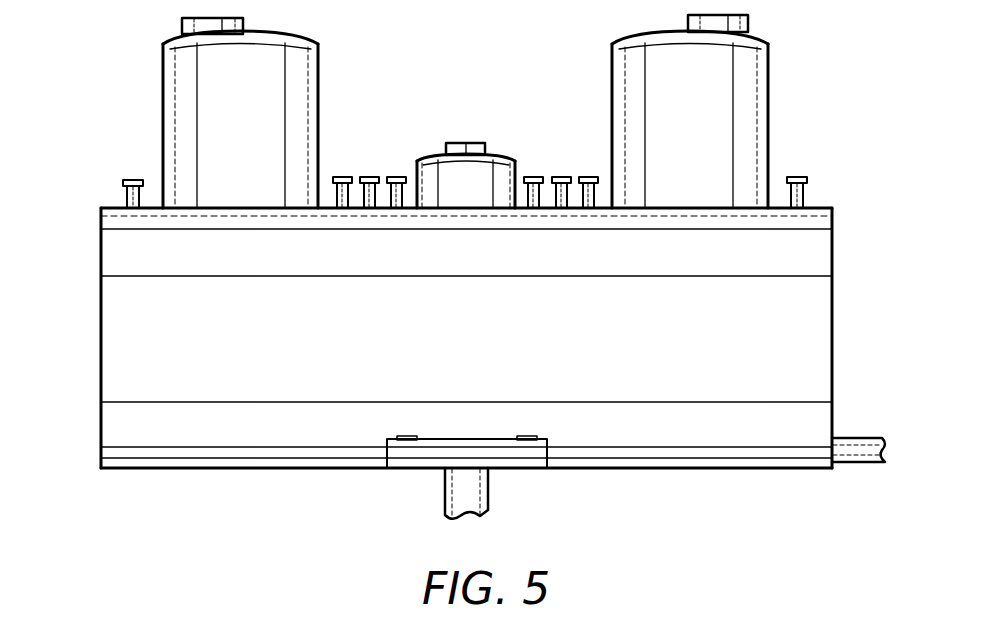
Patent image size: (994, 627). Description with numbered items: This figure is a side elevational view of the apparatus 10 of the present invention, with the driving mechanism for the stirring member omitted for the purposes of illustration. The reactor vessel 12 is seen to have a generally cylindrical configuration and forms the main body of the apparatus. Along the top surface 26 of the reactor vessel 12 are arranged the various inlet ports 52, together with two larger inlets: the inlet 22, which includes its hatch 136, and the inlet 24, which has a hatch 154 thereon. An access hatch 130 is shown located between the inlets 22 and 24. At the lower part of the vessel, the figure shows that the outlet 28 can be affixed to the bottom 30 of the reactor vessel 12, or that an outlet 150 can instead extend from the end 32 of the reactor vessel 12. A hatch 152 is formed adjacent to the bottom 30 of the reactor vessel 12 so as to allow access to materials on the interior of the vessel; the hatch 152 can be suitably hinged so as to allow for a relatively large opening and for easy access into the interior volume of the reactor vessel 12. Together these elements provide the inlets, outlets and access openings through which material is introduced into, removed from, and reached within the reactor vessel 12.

The apparatus 10 is at (793, 148).
The reactor vessel 12 is at (818, 320).
The inlet 22 is at (318, 88).
The inlet 24 is at (768, 115).
The top surface 26 is at (105, 208).
The outlet 28 is at (488, 497).
The bottom 30 is at (195, 470).
The end 32 is at (833, 364).
The inlet ports 52 is at (133, 180).
The access hatch 130 is at (497, 157).
The hatch 136 is at (268, 32).
The outlet 150 is at (870, 462).
The hatch 152 is at (547, 455).
The hatch 154 is at (660, 30).